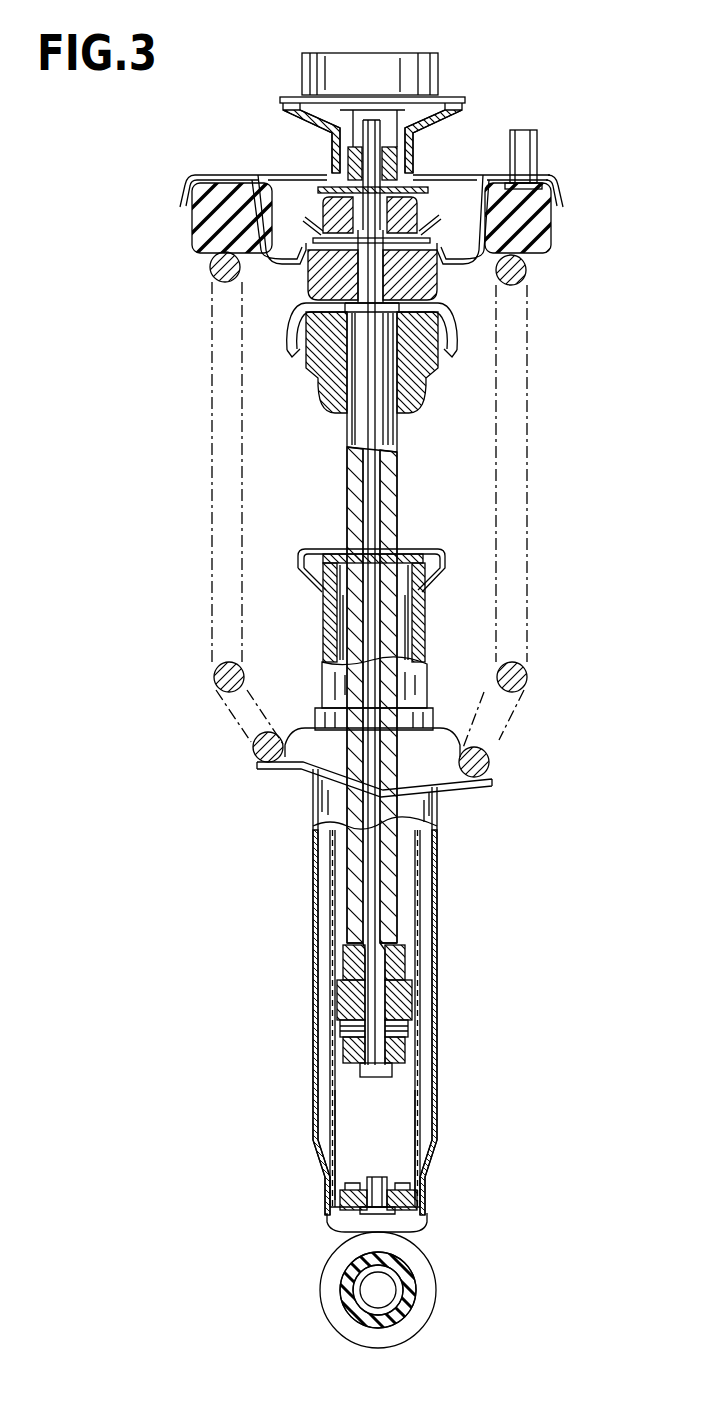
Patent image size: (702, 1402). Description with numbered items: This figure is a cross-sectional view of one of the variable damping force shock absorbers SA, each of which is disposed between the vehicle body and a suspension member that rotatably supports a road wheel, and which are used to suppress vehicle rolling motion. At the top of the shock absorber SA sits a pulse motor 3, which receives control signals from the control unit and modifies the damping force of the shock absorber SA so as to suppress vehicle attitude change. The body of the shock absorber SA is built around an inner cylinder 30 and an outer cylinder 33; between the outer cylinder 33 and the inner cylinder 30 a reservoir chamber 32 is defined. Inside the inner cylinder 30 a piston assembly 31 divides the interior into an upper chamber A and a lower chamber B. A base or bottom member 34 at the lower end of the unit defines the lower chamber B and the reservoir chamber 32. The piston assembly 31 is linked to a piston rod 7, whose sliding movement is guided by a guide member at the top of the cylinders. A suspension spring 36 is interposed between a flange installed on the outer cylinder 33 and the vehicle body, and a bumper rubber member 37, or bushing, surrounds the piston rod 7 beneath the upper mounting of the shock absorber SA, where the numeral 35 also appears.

The shock absorber SA is at (307, 35).
The pulse motor 3 is at (440, 53).
The piston rod 7 is at (325, 618).
The inner cylinder 30 is at (420, 1062).
The piston assembly 31 is at (415, 990).
The reservoir chamber 32 is at (325, 1100).
The outer cylinder 33 is at (313, 980).
The base member 34 is at (425, 1205).
The rod guide cap 35 is at (445, 585).
The suspension spring 36 is at (528, 678).
The bumper rubber member 37 is at (442, 359).
The upper chamber A is at (405, 842).
The lower chamber B is at (398, 1142).